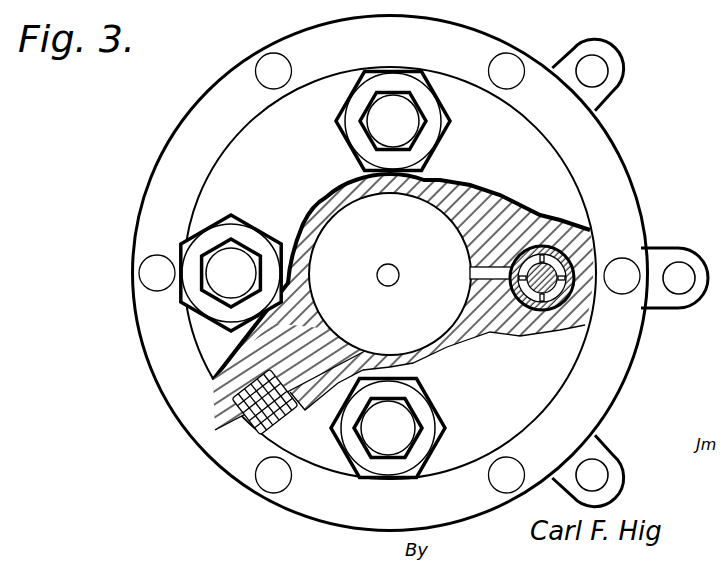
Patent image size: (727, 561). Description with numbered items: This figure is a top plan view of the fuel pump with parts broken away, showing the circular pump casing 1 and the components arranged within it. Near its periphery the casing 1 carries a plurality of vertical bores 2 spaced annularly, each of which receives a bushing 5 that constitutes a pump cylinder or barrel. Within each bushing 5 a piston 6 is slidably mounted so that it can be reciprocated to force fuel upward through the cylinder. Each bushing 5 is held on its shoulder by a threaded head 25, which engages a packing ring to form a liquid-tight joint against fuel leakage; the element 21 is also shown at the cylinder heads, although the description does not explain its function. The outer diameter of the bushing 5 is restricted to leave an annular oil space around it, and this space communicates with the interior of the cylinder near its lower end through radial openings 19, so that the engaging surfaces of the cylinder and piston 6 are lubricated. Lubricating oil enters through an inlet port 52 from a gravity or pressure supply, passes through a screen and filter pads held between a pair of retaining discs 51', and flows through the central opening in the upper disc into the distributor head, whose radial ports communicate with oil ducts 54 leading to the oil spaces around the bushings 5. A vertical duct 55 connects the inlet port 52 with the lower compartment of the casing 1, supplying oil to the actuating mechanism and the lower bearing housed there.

The pump casing 1 is at (548, 403).
The vertical bores 2 is at (562, 307).
The bushing 5 is at (557, 228).
The piston 6 is at (562, 285).
The radial openings 19 is at (538, 310).
The nut 21 is at (393, 120).
The threaded head 25 is at (393, 100).
The retaining discs 51' is at (371, 257).
The inlet port 52 is at (248, 413).
The oil ducts 54 is at (490, 266).
The vertical duct 55 is at (327, 347).